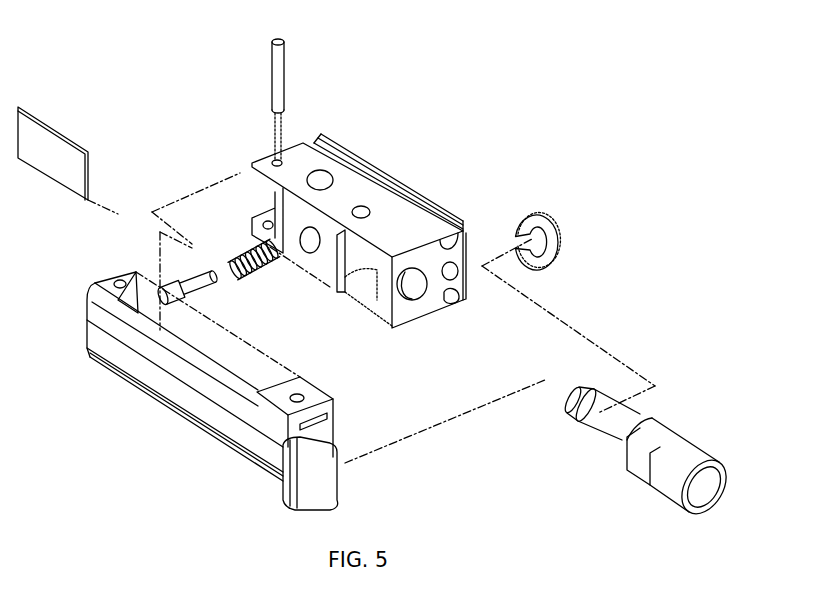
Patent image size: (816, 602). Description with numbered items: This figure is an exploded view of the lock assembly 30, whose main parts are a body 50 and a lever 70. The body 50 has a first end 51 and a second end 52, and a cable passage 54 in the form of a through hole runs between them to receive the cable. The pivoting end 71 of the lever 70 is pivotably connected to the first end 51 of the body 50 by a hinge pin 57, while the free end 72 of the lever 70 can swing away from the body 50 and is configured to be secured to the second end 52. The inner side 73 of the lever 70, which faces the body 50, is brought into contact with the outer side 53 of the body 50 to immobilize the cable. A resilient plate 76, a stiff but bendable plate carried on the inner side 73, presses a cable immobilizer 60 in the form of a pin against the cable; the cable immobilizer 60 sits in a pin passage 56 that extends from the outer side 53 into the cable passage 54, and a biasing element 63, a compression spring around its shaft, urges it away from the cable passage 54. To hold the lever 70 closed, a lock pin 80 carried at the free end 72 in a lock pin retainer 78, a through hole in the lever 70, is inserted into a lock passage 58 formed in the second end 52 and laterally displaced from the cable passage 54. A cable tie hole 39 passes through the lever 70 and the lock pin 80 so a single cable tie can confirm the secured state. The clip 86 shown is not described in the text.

The lock assembly 30 is at (557, 125).
The cable tie hole 39 is at (303, 395).
The body 50 is at (343, 239).
The first end 51 is at (268, 160).
The second end 52 is at (433, 303).
The outer side 53 is at (383, 315).
The cable passage 54 is at (452, 273).
The pin passage 56 is at (313, 235).
The hinge pin 57 is at (280, 56).
The lock passage 58 is at (420, 292).
The cable immobilizer 60 is at (199, 288).
The biasing element 63 is at (264, 271).
The lever 70 is at (231, 388).
The pivoting end 71 is at (110, 284).
The free end 72 is at (334, 496).
The inner side 73 is at (245, 383).
The resilient plate 76 is at (37, 140).
The lock pin retainer 78 is at (323, 427).
The lock pin 80 is at (669, 441).
The retaining clip 86 is at (541, 264).